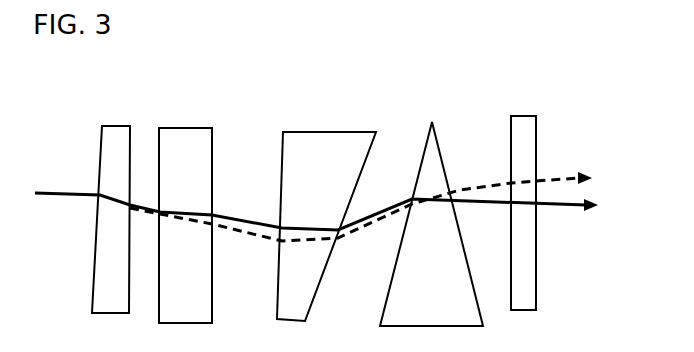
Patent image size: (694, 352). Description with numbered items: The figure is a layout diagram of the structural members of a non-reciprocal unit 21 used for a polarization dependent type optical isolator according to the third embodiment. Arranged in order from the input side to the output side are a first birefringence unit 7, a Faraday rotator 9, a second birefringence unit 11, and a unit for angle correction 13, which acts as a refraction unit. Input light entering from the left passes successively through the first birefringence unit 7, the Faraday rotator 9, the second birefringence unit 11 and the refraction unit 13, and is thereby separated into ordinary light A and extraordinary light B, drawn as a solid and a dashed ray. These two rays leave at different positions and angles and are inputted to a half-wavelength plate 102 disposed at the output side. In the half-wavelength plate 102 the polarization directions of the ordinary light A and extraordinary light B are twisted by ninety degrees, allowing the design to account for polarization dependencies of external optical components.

The first birefringence unit 7 is at (118, 126).
The Faraday rotator 9 is at (193, 128).
The second birefringence unit 11 is at (315, 132).
The unit for angle correction 13 is at (440, 148).
The half-wavelength plate 102 is at (538, 120).
The non-reciprocal unit 21 is at (597, 86).
The ordinary light A is at (552, 209).
The extraordinary light B is at (550, 176).